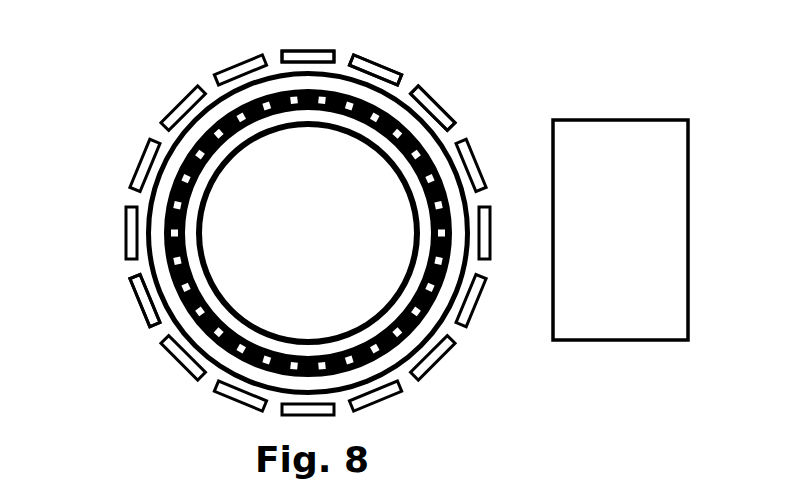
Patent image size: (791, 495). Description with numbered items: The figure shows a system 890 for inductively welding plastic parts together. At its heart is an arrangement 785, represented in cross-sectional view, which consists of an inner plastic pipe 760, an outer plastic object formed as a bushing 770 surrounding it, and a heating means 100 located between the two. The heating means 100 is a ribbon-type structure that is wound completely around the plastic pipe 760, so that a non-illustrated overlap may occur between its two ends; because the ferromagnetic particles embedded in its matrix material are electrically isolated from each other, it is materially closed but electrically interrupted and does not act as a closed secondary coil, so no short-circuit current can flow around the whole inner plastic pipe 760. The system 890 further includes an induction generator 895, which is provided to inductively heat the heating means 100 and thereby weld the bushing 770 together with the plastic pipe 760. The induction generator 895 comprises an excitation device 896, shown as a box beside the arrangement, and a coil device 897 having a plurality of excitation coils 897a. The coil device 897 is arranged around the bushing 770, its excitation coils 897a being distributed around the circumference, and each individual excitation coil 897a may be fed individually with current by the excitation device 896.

The heating means 100 is at (379, 123).
The inner plastic pipe 760 is at (432, 228).
The outer plastic object (bushing) 770 is at (156, 197).
The arrangement 785 is at (130, 270).
The system 890 is at (636, 74).
The induction generator 895 is at (568, 372).
The excitation device 896 is at (637, 245).
The coil device 897 is at (148, 98).
The excitation coils 897a is at (420, 88).